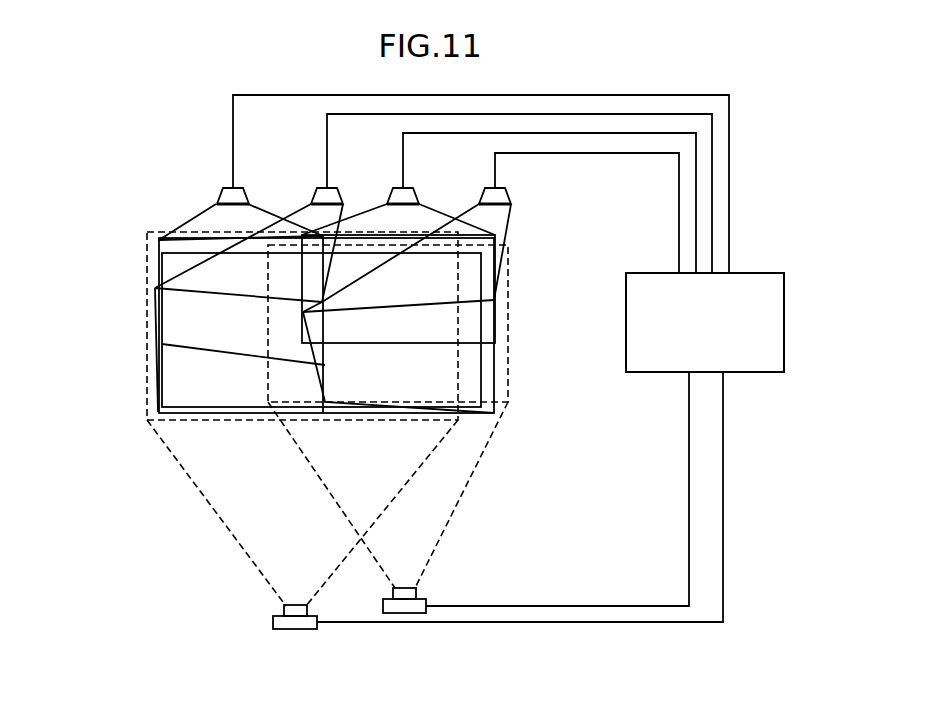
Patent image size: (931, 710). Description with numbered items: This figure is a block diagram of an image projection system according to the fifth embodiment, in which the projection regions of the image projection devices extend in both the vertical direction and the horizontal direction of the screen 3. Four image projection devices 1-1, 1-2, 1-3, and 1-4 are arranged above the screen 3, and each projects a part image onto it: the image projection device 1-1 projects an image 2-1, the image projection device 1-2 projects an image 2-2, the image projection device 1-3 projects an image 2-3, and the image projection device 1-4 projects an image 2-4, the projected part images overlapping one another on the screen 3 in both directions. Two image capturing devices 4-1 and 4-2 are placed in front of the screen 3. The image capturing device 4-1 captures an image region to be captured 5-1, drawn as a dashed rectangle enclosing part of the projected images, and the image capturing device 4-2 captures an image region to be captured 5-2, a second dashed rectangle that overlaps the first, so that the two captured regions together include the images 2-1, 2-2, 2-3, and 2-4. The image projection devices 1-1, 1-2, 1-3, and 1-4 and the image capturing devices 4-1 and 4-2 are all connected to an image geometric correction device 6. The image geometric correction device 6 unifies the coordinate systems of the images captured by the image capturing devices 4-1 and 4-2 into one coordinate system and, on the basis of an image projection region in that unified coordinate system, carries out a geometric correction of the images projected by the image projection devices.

The image projection device 1-1 is at (246, 193).
The image projection device 1-2 is at (340, 192).
The image projection device 1-3 is at (418, 192).
The image projection device 1-4 is at (509, 193).
The image 2-1 is at (158, 243).
The image 2-2 is at (156, 378).
The image 2-3 is at (499, 238).
The image 2-4 is at (470, 414).
The screen 3 is at (481, 277).
The image capturing device 4-1 is at (300, 630).
The image capturing device 4-2 is at (427, 598).
The image region to be captured 5-1 is at (237, 421).
The image region to be captured 5-2 is at (509, 378).
The image geometric correction device 6 is at (752, 272).